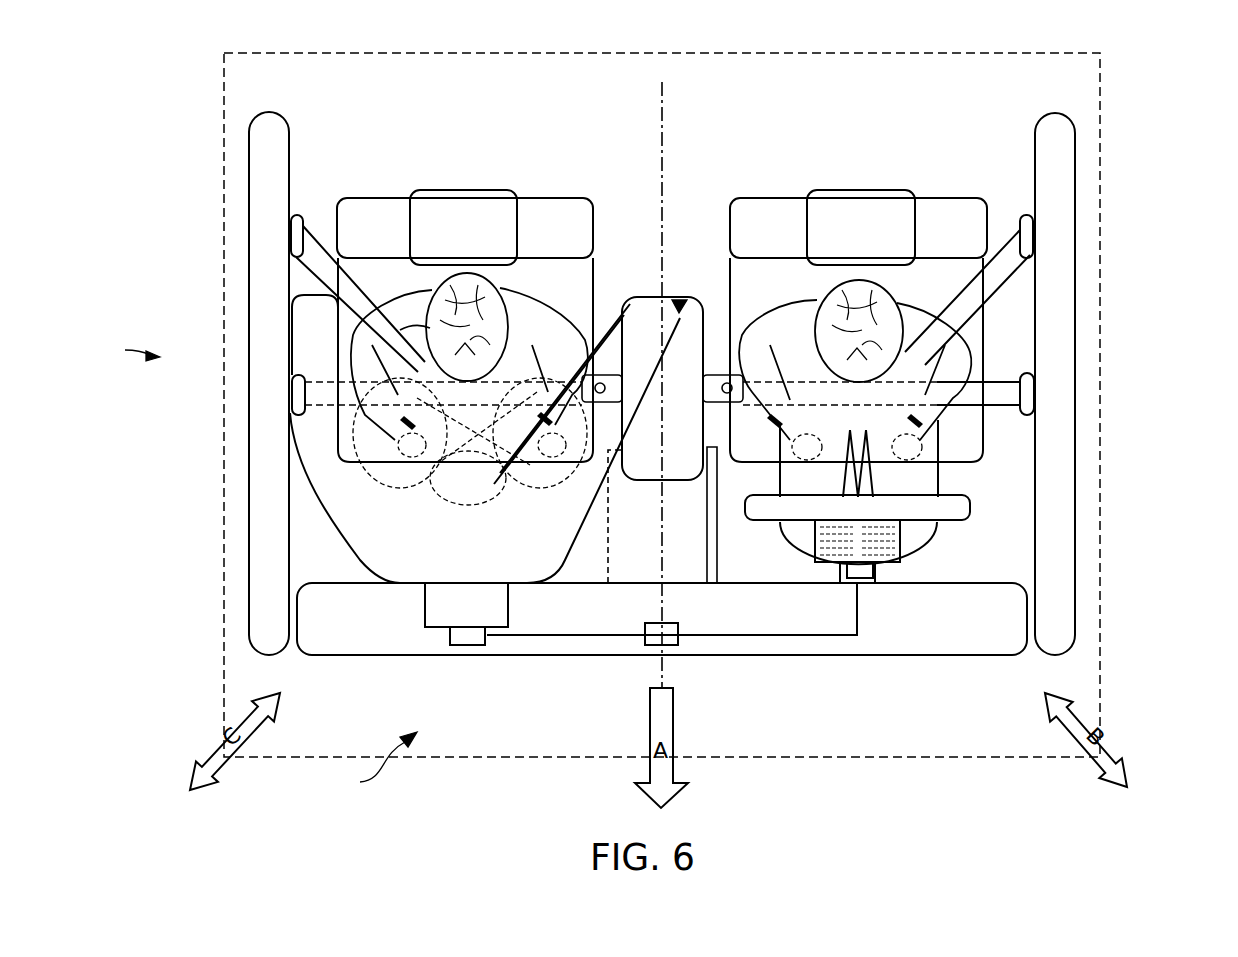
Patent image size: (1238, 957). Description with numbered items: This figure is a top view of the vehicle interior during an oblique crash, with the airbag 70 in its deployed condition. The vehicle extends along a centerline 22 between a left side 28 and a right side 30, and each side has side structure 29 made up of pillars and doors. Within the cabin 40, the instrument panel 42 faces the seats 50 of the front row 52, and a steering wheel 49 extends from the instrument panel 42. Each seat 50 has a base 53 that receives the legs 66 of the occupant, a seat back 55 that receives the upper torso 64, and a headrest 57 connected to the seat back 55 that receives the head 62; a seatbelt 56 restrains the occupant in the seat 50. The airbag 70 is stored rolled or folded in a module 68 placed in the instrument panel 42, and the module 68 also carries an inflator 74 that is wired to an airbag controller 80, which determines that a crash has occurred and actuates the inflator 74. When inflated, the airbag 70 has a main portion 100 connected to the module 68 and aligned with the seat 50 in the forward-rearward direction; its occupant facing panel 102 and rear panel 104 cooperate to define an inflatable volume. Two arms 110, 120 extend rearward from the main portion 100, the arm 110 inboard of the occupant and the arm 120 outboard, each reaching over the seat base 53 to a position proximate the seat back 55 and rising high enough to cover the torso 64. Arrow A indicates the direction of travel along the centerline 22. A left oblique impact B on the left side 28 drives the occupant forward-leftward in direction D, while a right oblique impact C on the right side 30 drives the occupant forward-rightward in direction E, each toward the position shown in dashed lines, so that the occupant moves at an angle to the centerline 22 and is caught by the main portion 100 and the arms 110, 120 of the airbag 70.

The centerline 22 is at (660, 104).
The left side 28 is at (1150, 411).
The side structure 29 is at (260, 192).
The right side 30 is at (123, 350).
The passenger compartment or cabin 40 is at (369, 767).
The instrument panel 42 is at (988, 642).
The steering wheel 49 is at (960, 507).
The seat 50 is at (345, 208).
The front row 52 is at (1030, 442).
The base or bottom 53 is at (338, 293).
The seat back 55 is at (393, 198).
The seatbelt 56 is at (335, 257).
The headrest 57 is at (465, 200).
The head 62 is at (462, 275).
The upper torso 64 is at (548, 300).
The legs 66 is at (927, 472).
The cover or housing/module 68 is at (815, 540).
The airbag 70 is at (673, 297).
The inflator 74 is at (463, 633).
The airbag controller 80 is at (667, 643).
The main portion 100 is at (377, 565).
The front or occupant facing panel 102 is at (433, 493).
The rear panel 104 is at (547, 587).
The arm 110 is at (650, 297).
The arm 120 is at (303, 325).